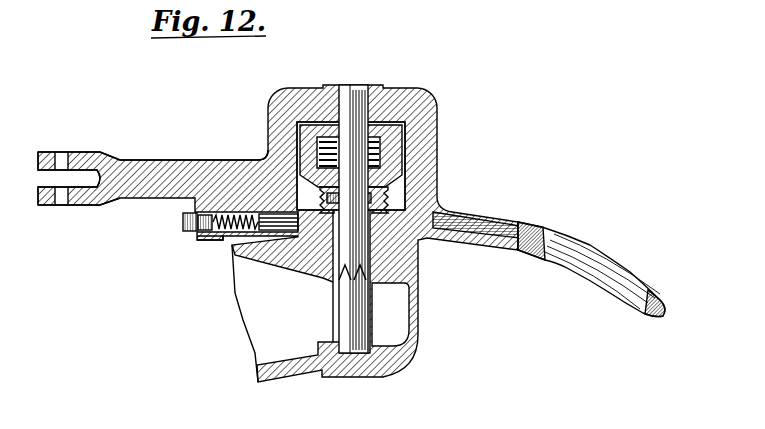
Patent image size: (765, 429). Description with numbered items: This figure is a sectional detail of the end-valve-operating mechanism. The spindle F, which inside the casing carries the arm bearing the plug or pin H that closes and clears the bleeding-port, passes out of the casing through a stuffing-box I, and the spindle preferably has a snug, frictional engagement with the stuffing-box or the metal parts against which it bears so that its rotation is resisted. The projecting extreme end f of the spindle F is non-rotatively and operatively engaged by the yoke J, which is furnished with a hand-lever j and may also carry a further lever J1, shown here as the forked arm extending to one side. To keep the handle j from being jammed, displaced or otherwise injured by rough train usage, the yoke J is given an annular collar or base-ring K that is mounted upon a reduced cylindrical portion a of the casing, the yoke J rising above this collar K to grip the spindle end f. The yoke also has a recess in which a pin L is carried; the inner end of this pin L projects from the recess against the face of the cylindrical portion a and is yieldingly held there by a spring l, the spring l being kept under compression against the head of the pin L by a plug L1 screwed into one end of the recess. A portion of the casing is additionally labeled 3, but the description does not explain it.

The yoke J is at (306, 90).
The casing fillet 3 is at (265, 150).
The lever J1 is at (75, 152).
The stuffing-box I is at (433, 147).
The plug or pin H is at (433, 172).
The reduced cylindrical portion a is at (394, 218).
The extreme end of the spindle f is at (360, 86).
The annular collar K is at (423, 238).
The hand-lever j is at (561, 241).
The plug L1 is at (193, 232).
The spring l is at (220, 241).
The pin L is at (268, 237).
The spindle F is at (347, 233).